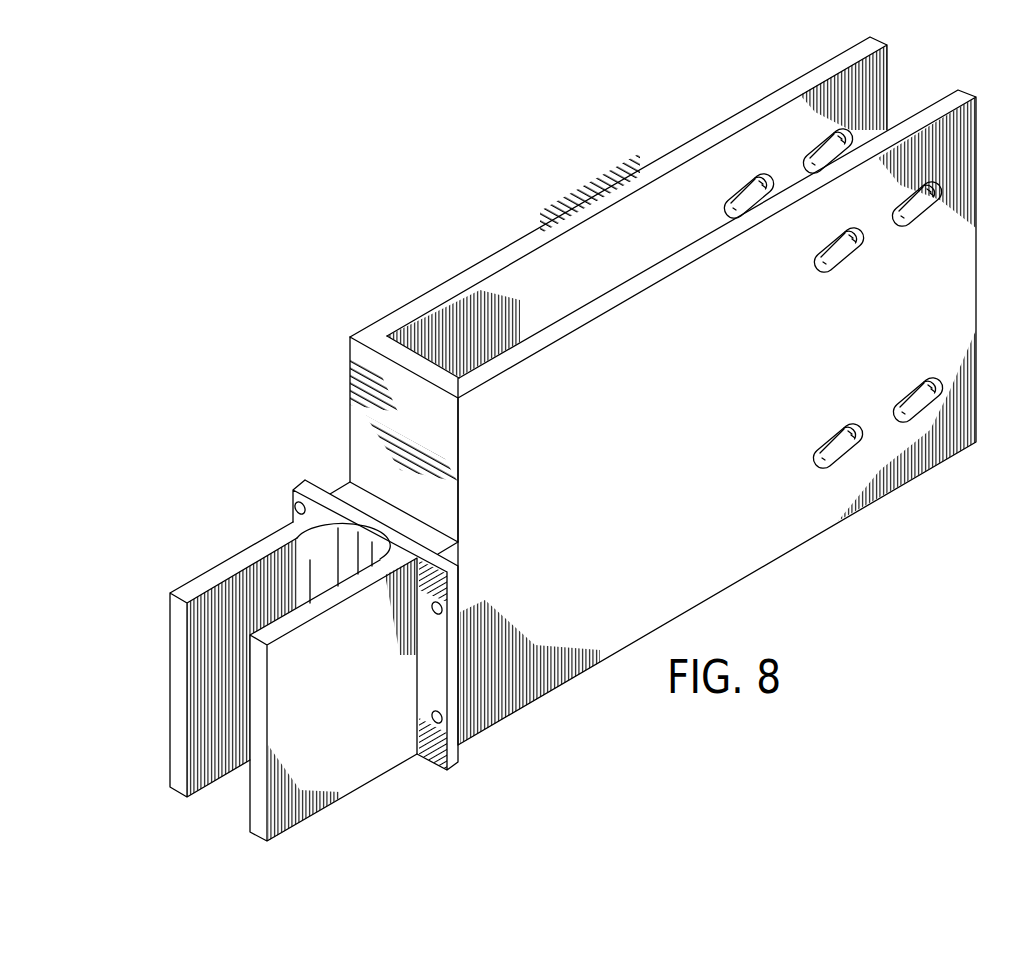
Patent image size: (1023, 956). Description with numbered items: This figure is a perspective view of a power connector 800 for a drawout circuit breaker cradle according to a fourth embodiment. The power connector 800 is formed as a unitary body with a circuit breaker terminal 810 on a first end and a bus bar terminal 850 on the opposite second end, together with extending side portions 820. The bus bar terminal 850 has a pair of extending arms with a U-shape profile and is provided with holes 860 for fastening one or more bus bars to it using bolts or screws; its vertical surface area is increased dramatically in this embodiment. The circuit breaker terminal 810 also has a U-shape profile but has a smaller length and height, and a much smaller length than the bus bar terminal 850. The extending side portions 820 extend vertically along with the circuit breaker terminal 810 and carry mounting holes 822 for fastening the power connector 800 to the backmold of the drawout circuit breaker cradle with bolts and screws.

The power connector 800 is at (395, 247).
The bus bar terminal 850 is at (566, 213).
The holes 860 is at (812, 437).
The extending side portions 820 is at (298, 484).
The mounting holes 822 is at (432, 716).
The circuit breaker terminal 810 is at (215, 572).